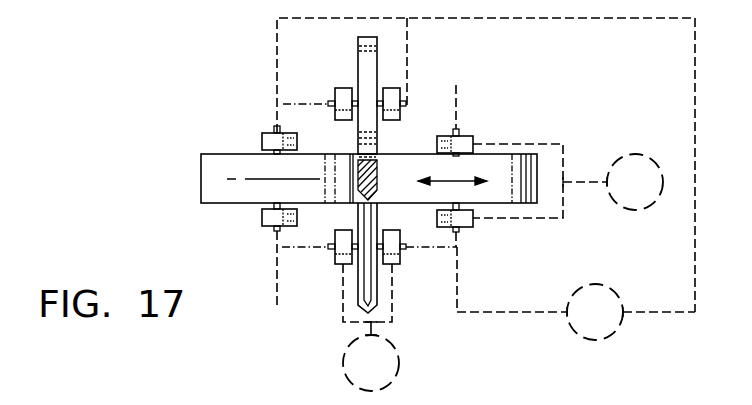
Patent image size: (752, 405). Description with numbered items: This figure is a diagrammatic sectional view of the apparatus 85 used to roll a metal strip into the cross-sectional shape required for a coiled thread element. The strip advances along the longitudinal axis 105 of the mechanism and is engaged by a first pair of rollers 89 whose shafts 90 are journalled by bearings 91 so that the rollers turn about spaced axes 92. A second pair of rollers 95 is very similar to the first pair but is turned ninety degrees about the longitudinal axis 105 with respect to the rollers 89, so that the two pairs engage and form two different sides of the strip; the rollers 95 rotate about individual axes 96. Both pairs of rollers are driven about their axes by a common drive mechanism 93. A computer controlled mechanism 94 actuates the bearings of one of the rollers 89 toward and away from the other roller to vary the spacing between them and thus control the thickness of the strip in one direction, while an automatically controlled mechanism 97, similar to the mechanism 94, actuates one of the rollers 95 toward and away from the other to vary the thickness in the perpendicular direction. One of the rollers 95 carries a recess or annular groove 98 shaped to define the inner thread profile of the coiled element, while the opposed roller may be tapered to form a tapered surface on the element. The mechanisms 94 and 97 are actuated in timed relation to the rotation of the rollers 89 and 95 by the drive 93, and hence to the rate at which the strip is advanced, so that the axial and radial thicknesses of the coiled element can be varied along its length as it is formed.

The apparatus 85 is at (543, 110).
The first pair of rollers 89 is at (201, 186).
The shafts 90 is at (277, 130).
The bearings 91 is at (262, 218).
The spaced axes 92 is at (456, 110).
The drive mechanism 93 is at (576, 293).
The computer controlled mechanism 94 is at (568, 181).
The second pair of rollers 95 is at (370, 69).
The individual axes 96 is at (313, 103).
The automatically controlled mechanism 97 is at (371, 327).
The recess or annular groove 98 is at (358, 183).
The longitudinal axis 105 is at (252, 178).